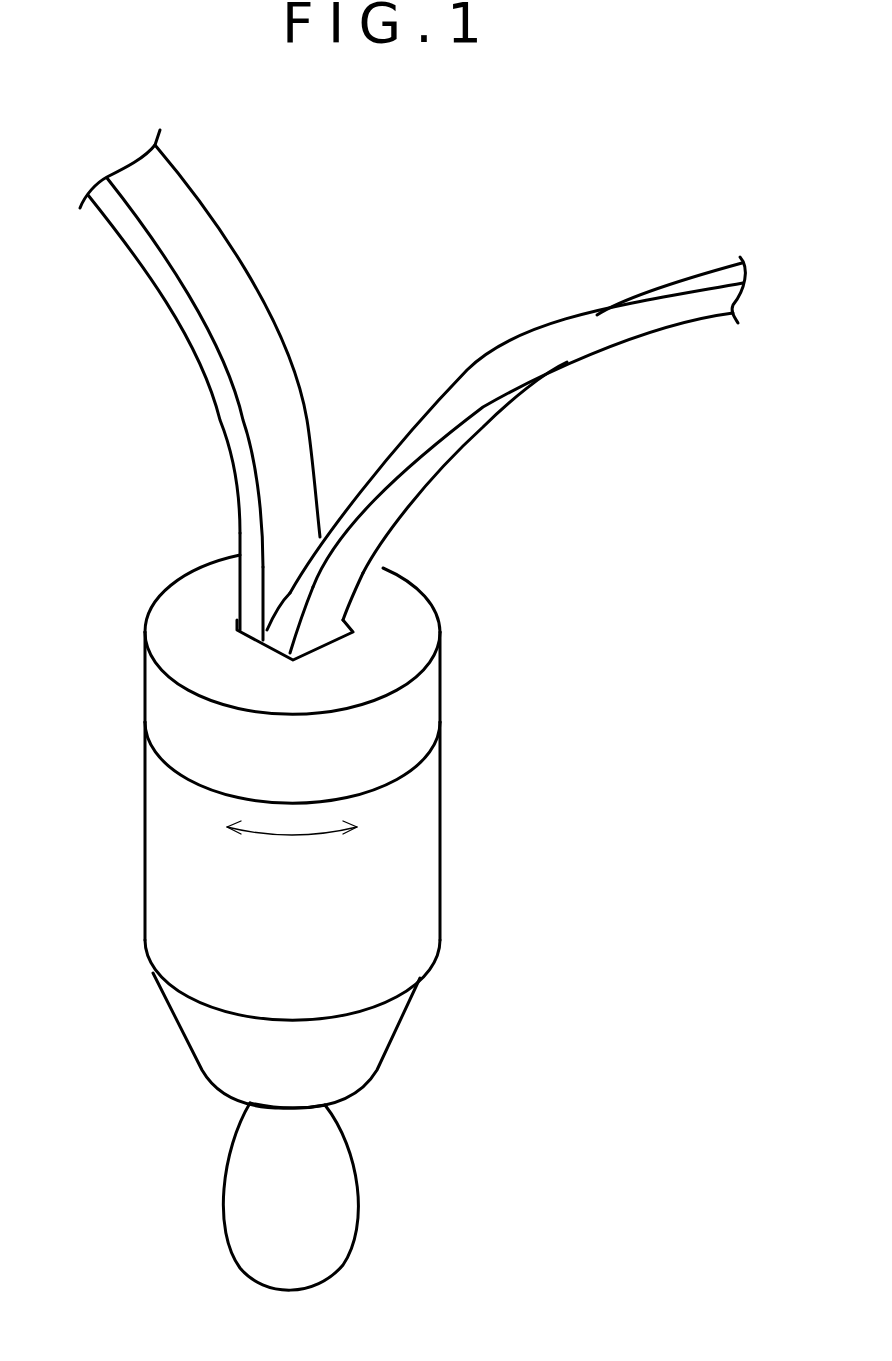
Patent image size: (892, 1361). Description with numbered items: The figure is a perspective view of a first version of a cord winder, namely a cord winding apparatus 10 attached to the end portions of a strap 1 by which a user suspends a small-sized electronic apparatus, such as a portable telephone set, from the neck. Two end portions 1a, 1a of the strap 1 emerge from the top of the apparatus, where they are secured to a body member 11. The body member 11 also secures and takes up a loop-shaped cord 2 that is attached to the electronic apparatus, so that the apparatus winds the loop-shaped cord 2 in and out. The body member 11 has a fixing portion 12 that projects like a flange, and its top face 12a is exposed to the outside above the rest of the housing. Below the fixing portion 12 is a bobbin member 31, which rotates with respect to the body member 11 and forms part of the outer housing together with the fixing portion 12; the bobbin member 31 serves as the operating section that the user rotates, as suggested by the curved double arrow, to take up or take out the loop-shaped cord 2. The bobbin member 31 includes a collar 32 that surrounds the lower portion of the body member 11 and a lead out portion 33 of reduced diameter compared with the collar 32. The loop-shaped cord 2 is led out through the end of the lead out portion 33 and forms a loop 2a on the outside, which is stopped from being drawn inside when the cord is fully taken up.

The strap 1 is at (208, 242).
The end portions of the strap 1a is at (257, 567).
The loop-shaped cord 2 is at (341, 1196).
The loop 2a is at (347, 1248).
The cord winding apparatus 10 is at (316, 808).
The body member 11 is at (277, 679).
The fixing portion 12 is at (280, 679).
The top face 12a is at (177, 600).
The bobbin member 31 is at (273, 915).
The collar 32 is at (423, 863).
The lead out portion 33 is at (375, 1047).